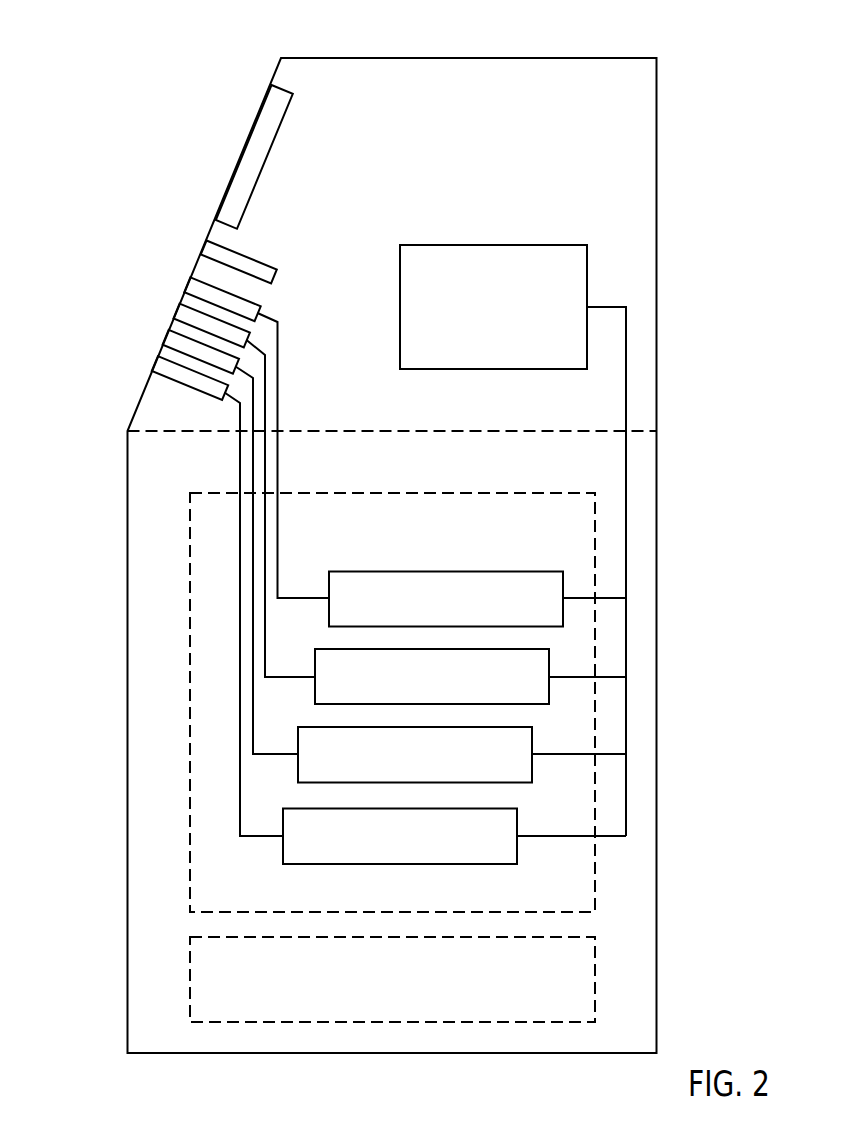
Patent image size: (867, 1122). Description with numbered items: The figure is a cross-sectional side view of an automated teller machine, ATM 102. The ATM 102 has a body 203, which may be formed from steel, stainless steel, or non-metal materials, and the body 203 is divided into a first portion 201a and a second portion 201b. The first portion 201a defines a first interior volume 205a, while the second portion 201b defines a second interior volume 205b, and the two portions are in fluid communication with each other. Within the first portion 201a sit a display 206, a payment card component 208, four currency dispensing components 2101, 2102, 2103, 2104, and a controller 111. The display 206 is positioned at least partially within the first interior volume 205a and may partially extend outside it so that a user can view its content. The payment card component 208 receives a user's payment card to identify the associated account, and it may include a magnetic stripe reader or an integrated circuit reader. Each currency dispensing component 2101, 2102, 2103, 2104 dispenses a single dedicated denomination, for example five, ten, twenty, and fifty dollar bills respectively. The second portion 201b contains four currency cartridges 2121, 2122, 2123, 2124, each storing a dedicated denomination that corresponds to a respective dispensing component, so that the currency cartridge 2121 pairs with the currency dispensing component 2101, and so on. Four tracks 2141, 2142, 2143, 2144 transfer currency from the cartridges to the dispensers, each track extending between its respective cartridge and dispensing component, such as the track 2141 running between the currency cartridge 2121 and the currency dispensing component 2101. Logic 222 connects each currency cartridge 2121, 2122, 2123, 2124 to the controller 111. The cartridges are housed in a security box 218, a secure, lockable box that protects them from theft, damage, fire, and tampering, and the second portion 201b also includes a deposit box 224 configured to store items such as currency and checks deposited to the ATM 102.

The ATM 102 is at (196, 64).
The first portion 201a is at (72, 155).
The second portion 201b is at (74, 584).
The body 203 is at (657, 164).
The first interior volume 205a is at (392, 270).
The second interior volume 205b is at (392, 732).
The display 206 is at (268, 155).
The payment card component 208 is at (273, 263).
The currency dispensing component 2101 is at (192, 292).
The currency dispensing component 2102 is at (181, 319).
The currency dispensing component 2103 is at (168, 346).
The currency dispensing component 2104 is at (156, 372).
The controller 111 is at (508, 318).
The currency cartridge 2121 is at (446, 599).
The currency cartridge 2122 is at (432, 676).
The currency cartridge 2123 is at (415, 755).
The currency cartridge 2124 is at (400, 837).
The track 2141 is at (303, 455).
The track 2142 is at (291, 508).
The track 2143 is at (284, 561).
The track 2144 is at (226, 615).
The security box 218 is at (435, 493).
The logic 222 is at (626, 529).
The deposit box 224 is at (405, 990).